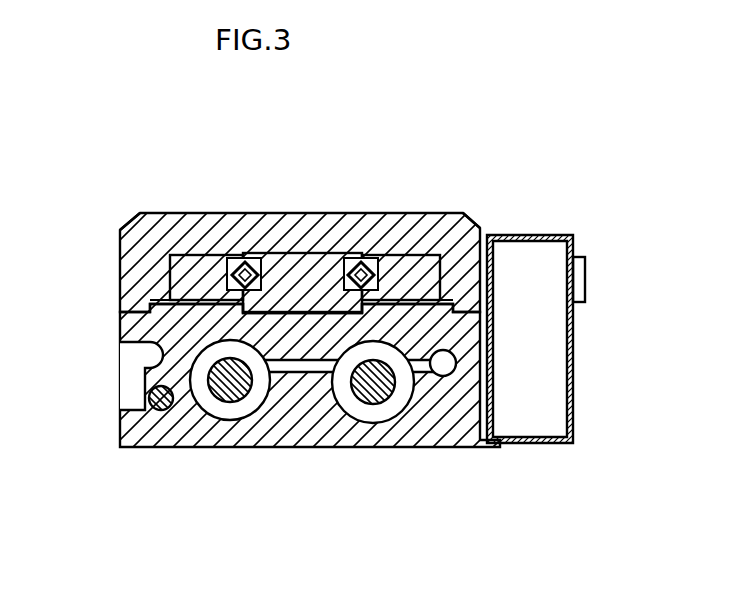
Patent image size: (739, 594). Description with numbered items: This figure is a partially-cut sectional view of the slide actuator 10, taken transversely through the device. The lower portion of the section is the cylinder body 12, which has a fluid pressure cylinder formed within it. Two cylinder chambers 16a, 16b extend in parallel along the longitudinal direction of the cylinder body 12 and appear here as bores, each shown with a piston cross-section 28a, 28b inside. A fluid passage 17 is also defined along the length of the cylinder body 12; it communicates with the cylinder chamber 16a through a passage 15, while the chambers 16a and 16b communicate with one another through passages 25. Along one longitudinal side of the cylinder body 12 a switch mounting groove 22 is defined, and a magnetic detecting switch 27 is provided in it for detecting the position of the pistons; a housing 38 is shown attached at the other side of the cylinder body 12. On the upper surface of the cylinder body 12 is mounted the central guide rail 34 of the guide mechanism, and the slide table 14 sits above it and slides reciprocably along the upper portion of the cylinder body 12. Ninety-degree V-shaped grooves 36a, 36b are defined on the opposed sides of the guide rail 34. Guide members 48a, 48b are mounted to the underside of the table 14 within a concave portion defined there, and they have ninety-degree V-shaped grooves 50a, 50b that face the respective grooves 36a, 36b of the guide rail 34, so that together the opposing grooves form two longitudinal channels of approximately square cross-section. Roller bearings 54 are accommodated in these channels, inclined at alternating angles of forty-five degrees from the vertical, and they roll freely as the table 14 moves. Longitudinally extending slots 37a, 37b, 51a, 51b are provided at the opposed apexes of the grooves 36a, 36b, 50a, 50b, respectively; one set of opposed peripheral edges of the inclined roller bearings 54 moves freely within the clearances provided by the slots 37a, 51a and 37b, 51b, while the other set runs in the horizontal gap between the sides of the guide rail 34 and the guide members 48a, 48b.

The slide actuator 10 is at (299, 258).
The cylinder body 12 is at (310, 410).
The slide table 14 is at (263, 263).
The passage 15 is at (432, 428).
The cylinder chamber 16a is at (394, 437).
The cylinder chamber 16b is at (199, 432).
The fluid passage 17 is at (464, 433).
The switch mounting groove 22 is at (106, 376).
The passages 25 is at (306, 453).
The magnetic detecting switch 27 is at (111, 418).
The piston 28a is at (376, 438).
The piston 28b is at (232, 447).
The central guide rail 34 is at (302, 213).
The V-shaped groove 36a is at (371, 182).
The V-shaped groove 36b is at (267, 183).
The slot 37a is at (340, 224).
The slot 37b is at (271, 215).
The housing 38 is at (563, 339).
The guide member 48a is at (483, 194).
The guide member 48b is at (108, 195).
The V-shaped groove 50a is at (385, 202).
The V-shaped groove 50b is at (233, 193).
The slot 51a is at (402, 231).
The slot 51b is at (206, 223).
The roller bearings 54 is at (292, 298).